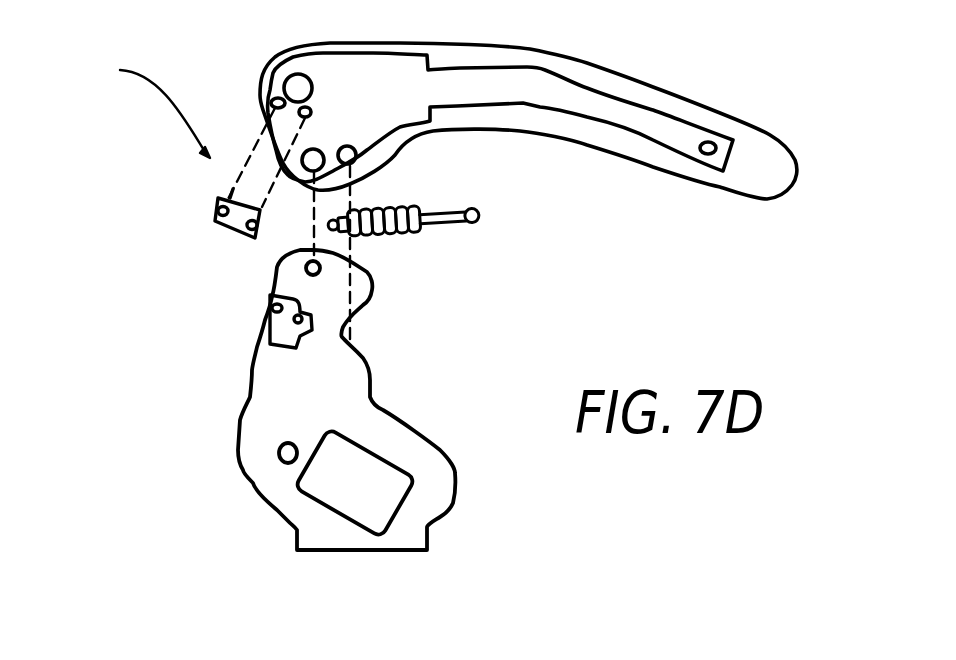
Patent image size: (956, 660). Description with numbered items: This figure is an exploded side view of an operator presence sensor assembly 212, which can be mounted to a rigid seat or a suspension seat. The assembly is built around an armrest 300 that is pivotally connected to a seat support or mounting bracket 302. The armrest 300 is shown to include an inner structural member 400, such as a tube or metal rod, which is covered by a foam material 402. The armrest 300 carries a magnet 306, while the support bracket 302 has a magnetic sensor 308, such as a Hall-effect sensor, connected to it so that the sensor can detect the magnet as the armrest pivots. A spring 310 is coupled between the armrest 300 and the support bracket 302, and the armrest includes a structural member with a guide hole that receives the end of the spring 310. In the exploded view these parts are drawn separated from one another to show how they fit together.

The operator presence sensor assembly 212 is at (211, 201).
The armrest 300 is at (693, 182).
The support bracket 302 is at (256, 490).
The magnet 306 is at (240, 240).
The magnetic sensor 308 is at (268, 320).
The spring 310 is at (420, 233).
The inner structural member 400 is at (590, 85).
The foam material 402 is at (768, 155).